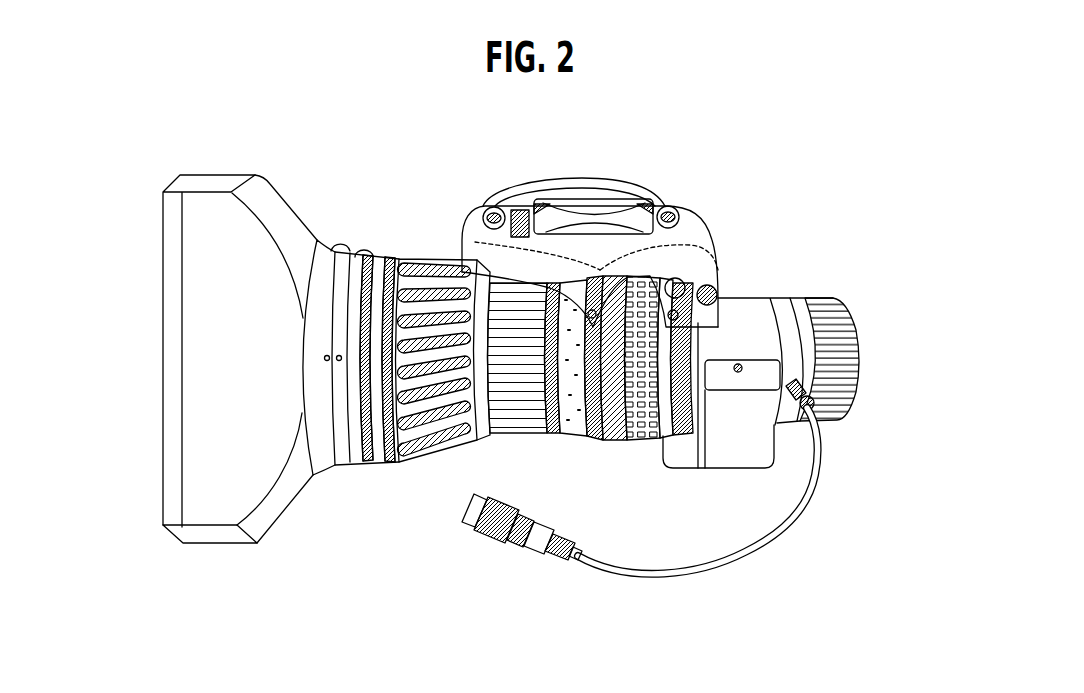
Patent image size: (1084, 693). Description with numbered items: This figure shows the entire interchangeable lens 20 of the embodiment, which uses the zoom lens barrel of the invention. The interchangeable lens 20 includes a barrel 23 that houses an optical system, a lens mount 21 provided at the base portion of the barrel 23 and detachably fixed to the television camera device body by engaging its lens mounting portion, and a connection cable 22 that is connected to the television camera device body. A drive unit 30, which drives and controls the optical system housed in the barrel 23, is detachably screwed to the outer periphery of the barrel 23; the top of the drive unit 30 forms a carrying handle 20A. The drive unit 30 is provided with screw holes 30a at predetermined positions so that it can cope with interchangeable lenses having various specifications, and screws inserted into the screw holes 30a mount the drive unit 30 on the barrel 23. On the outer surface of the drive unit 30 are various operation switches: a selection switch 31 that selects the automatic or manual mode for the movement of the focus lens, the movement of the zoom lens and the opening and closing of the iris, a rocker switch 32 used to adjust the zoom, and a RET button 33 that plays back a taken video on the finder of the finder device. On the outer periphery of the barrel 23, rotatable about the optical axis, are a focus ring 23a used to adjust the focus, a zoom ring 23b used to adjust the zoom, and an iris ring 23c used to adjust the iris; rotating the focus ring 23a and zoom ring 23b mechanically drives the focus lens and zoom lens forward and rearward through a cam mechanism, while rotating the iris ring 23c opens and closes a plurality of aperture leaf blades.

The interchangeable lens 20 is at (458, 458).
The handle 20A is at (548, 178).
The lens mount 21 is at (818, 292).
The connection cable 22 is at (733, 562).
The barrel 23 is at (583, 441).
The focus ring 23a is at (543, 436).
The zoom ring 23b is at (600, 438).
The iris ring 23c is at (662, 452).
The drive unit 30 is at (718, 221).
The screw holes 30a is at (728, 290).
The selection switch 31 is at (514, 210).
The rocker switch 32 is at (600, 212).
The RET button 33 is at (674, 207).